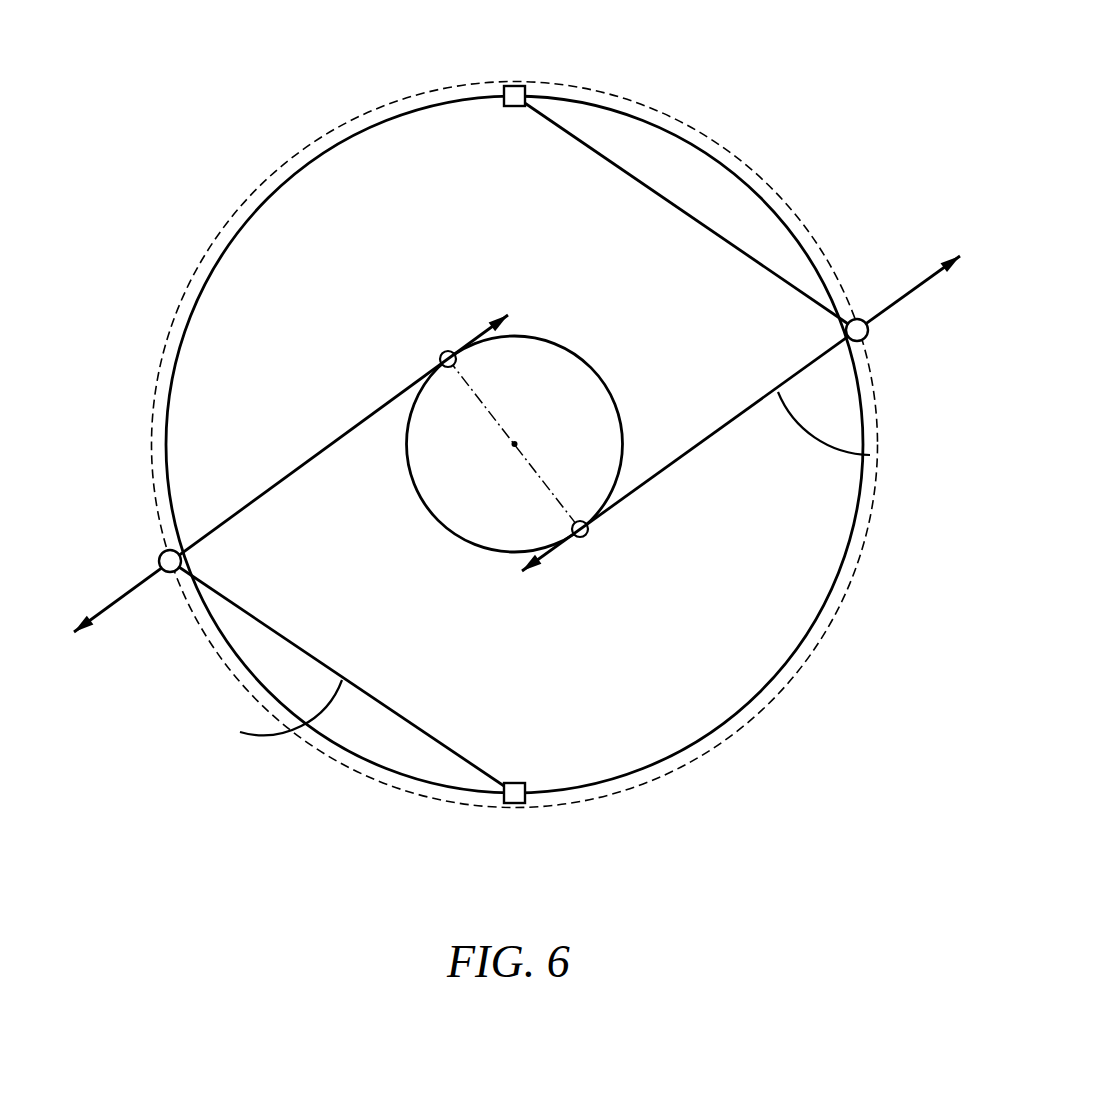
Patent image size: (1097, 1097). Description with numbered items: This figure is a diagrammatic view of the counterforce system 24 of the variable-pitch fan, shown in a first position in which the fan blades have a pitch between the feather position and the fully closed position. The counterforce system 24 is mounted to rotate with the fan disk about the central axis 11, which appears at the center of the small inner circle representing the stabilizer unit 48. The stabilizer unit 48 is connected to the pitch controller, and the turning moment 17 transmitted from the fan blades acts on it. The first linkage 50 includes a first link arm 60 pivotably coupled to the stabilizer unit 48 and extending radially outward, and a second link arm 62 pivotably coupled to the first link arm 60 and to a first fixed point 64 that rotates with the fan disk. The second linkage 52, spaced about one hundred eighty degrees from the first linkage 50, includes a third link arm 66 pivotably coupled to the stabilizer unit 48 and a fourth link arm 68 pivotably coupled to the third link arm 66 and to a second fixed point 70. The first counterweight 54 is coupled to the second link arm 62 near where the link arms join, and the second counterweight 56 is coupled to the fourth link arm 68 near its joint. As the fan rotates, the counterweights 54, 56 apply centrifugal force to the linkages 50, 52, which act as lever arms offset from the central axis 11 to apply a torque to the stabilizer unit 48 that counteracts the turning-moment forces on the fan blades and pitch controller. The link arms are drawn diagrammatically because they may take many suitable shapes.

The counterforce system 24 is at (708, 66).
The first linkage 50 is at (790, 250).
The stabilizer unit 48 is at (556, 330).
The central axis 11 is at (518, 442).
The turning moment 17 is at (552, 550).
The third link arm 66 is at (315, 453).
The first link arm 60 is at (870, 455).
The second link arm 62 is at (688, 210).
The second linkage 52 is at (258, 638).
The fourth link arm 68 is at (273, 715).
The first fixed point 64 is at (527, 89).
The second fixed point 70 is at (510, 808).
The first counterweight 54 is at (875, 350).
The second counterweight 56 is at (150, 560).